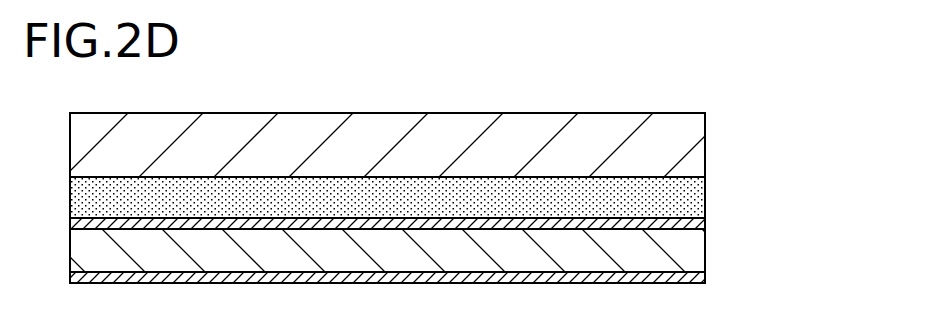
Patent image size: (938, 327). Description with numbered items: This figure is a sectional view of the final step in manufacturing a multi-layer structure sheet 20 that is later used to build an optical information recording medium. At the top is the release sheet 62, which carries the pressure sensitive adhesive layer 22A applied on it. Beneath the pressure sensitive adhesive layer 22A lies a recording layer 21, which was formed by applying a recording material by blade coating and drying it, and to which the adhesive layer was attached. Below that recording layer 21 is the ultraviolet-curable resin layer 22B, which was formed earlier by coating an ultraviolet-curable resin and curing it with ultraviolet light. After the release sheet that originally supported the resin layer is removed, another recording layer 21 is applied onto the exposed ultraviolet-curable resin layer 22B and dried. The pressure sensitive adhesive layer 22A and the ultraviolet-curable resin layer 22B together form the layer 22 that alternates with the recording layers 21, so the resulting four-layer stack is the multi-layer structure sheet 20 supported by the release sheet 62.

The release sheet 62 is at (687, 135).
The pressure sensitive adhesive layer 22A is at (685, 192).
The ultraviolet-curable resin layer 22B is at (685, 252).
The intermediate layer 22 is at (451, 224).
The recording layer 21 is at (697, 225).
The multi-layer structure sheet 20 is at (476, 237).